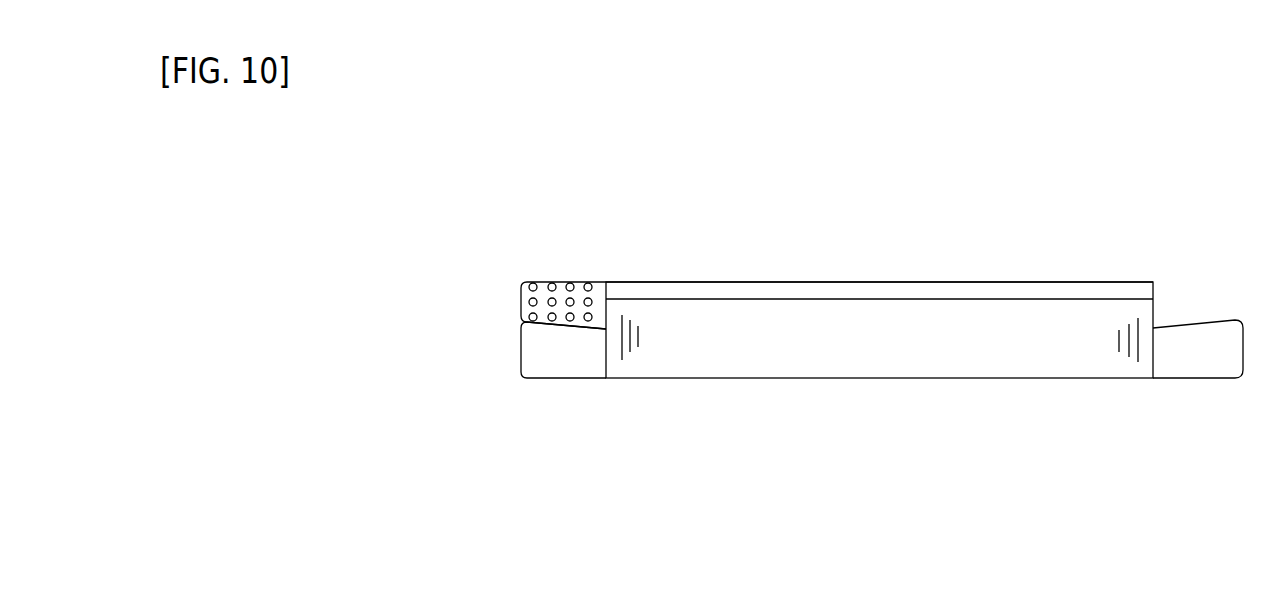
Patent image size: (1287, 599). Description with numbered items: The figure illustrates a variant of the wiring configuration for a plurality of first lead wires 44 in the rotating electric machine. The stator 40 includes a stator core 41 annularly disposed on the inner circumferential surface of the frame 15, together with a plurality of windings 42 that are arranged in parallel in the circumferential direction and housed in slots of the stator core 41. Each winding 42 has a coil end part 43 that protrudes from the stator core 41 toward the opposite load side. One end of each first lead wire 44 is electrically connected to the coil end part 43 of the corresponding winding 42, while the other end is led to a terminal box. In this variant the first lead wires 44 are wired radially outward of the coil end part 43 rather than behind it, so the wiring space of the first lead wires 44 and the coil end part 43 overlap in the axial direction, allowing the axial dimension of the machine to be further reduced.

The frame 15 is at (803, 282).
The stator 40 is at (1040, 281).
The stator core 41 is at (929, 320).
The winding 42 is at (1193, 350).
The coil end part 43 is at (577, 362).
The first lead wire 44 is at (528, 298).